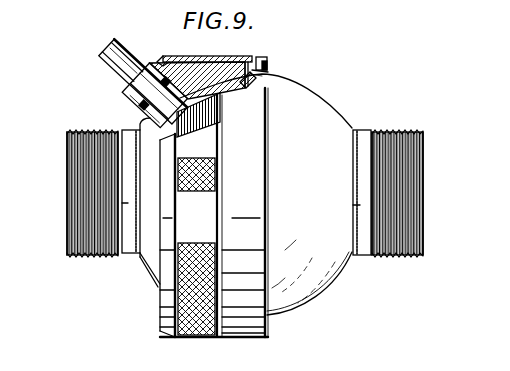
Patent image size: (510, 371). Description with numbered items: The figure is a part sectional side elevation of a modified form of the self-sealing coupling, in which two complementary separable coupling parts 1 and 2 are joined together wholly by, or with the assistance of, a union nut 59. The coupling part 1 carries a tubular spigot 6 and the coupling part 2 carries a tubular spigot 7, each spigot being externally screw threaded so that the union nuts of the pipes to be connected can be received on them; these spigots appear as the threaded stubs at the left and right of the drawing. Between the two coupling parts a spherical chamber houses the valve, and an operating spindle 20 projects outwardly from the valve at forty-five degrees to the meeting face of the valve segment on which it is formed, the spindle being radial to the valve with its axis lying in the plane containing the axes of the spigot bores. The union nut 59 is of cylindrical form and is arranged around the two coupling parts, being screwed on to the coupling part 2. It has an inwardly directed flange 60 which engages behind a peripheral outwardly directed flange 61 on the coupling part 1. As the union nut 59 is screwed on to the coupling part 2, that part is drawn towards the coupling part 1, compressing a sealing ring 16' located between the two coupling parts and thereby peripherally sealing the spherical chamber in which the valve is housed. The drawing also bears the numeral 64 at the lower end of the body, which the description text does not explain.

The coupling part 1 is at (333, 98).
The coupling part 2 is at (141, 264).
The tubular spigot 6 is at (399, 130).
The tubular spigot 7 is at (67, 134).
The sealing ring 16' is at (233, 104).
The operating spindle 20 is at (116, 43).
The union nut 59 is at (253, 58).
The inwardly directed flange 60 is at (267, 63).
The peripheral outwardly directed flange 61 is at (262, 72).
The bottom wall lining 64 is at (196, 341).